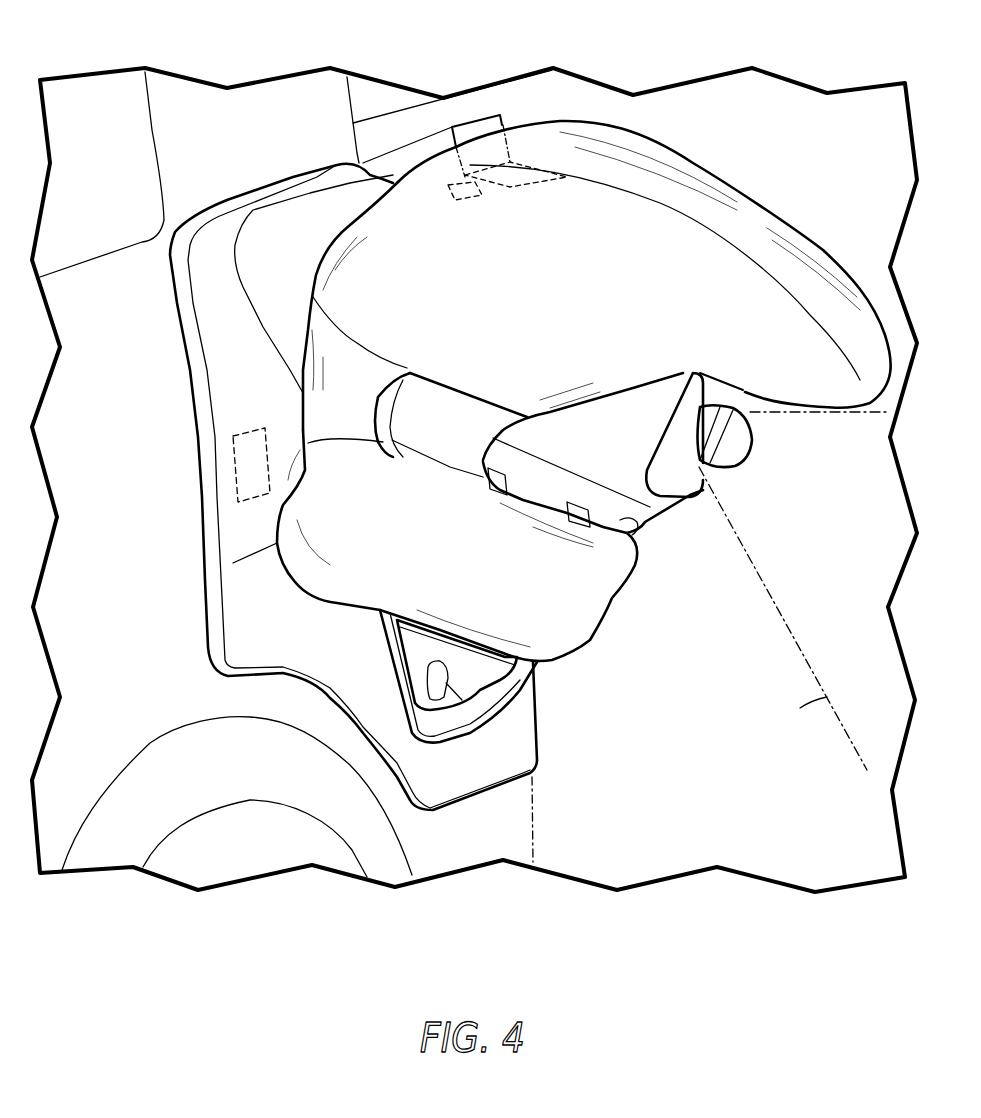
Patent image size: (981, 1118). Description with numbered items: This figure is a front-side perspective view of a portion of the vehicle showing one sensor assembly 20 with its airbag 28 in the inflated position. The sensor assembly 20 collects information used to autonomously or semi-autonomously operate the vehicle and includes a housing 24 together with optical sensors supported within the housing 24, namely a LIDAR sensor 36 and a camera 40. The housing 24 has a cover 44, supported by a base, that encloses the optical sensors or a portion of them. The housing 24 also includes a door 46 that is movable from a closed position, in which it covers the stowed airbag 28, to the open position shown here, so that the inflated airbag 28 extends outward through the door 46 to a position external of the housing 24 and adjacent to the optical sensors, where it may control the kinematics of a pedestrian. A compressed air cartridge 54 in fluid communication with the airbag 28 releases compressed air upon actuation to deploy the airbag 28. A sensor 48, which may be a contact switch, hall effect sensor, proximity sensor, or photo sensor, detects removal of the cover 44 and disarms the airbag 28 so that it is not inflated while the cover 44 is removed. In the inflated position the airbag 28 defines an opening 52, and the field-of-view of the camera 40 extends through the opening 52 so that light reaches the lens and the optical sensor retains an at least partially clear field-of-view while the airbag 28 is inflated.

The sensor assembly 20 is at (230, 150).
The housing 24 is at (644, 248).
The airbag 28 is at (742, 227).
The cover 44 is at (368, 247).
The door 46 is at (472, 120).
The sensor 48 is at (218, 456).
The opening 52 is at (603, 396).
The compressed air cartridge 54 is at (482, 205).
The LIDAR sensor 36 is at (583, 597).
The camera 40 is at (700, 467).